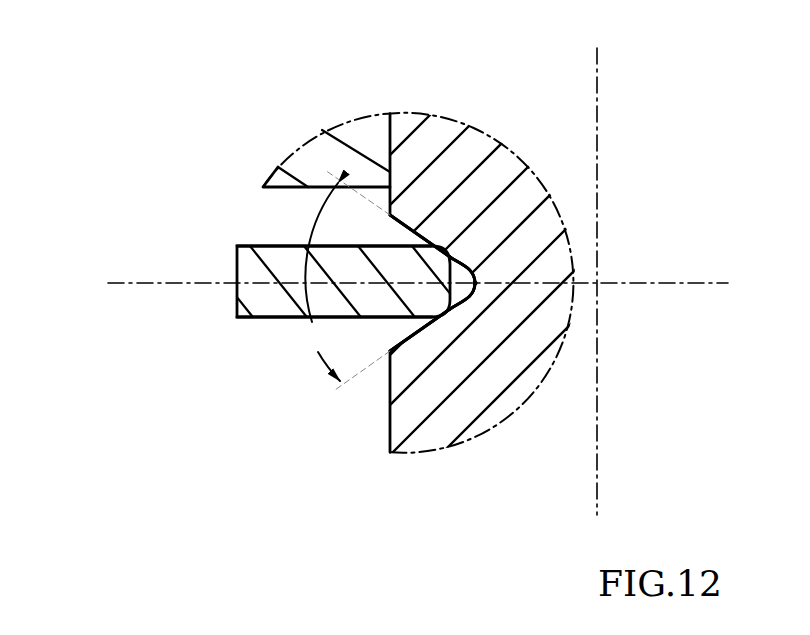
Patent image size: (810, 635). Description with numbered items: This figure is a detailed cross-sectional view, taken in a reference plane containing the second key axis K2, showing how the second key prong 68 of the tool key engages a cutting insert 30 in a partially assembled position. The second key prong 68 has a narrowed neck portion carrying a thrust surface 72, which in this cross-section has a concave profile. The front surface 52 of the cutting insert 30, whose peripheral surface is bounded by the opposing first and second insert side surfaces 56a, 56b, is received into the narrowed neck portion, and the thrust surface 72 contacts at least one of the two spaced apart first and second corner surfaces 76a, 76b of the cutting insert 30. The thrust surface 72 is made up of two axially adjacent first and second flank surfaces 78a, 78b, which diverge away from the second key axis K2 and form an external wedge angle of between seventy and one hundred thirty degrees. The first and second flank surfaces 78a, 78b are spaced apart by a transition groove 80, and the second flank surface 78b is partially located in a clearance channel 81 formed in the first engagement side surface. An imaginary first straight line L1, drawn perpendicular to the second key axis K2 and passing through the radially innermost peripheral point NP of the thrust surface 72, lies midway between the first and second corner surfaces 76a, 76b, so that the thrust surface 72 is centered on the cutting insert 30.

The cutting insert 30 is at (268, 297).
The front surface 52 is at (457, 293).
The first insert side surface 56a is at (278, 320).
The second insert side surface 56b is at (279, 243).
The second key prong 68 is at (513, 203).
The thrust surface 72 is at (396, 329).
The first corner surface 76a is at (451, 306).
The second corner surface 76b is at (473, 278).
The first flank surface 78a is at (403, 338).
The second flank surface 78b is at (397, 222).
The transition groove 80 is at (458, 262).
The clearance channel 81 is at (300, 196).
The radially innermost peripheral point NP is at (475, 283).
The imaginary first straight line L1 is at (419, 282).
The second key axis K2 is at (596, 282).